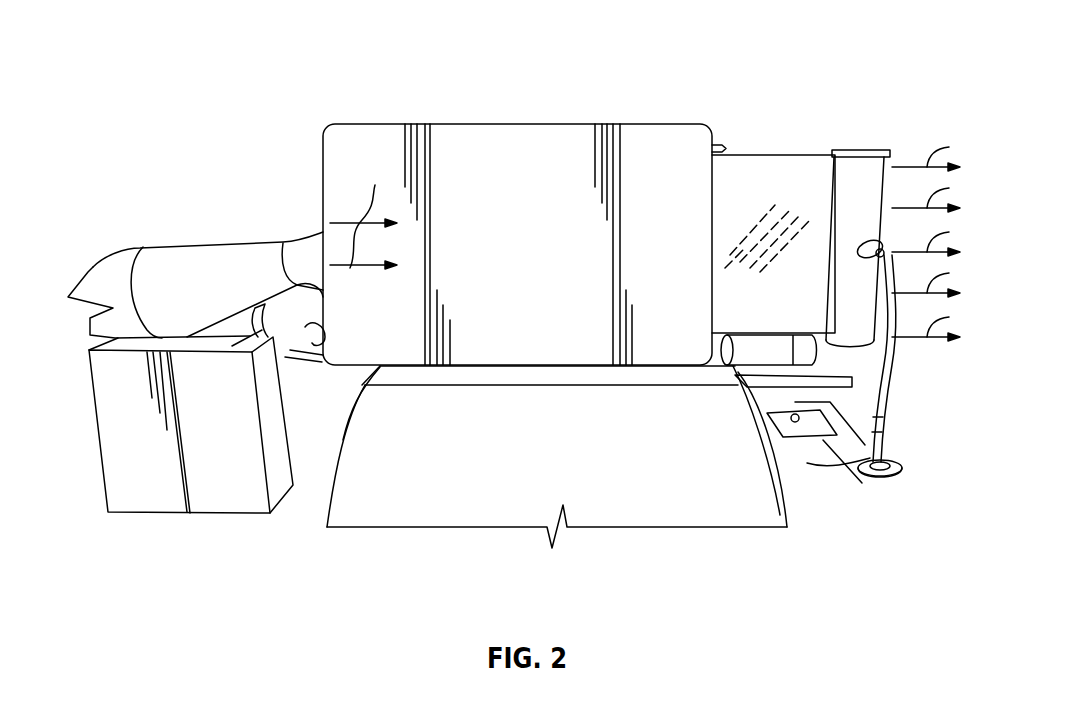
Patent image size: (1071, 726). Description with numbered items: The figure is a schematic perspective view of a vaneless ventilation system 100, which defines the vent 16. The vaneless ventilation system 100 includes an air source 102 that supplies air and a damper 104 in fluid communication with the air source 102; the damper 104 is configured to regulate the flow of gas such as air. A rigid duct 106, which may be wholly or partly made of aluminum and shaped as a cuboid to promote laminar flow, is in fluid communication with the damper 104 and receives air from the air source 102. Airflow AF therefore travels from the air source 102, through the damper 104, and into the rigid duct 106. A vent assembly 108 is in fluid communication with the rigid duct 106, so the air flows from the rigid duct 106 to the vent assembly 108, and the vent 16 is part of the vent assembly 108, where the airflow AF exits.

The vaneless ventilation system 100 is at (585, 100).
The air source 102 is at (170, 258).
The damper 104 is at (338, 168).
The rigid duct 106 is at (771, 166).
The vent 16 is at (890, 160).
The vent assembly 108 is at (864, 362).